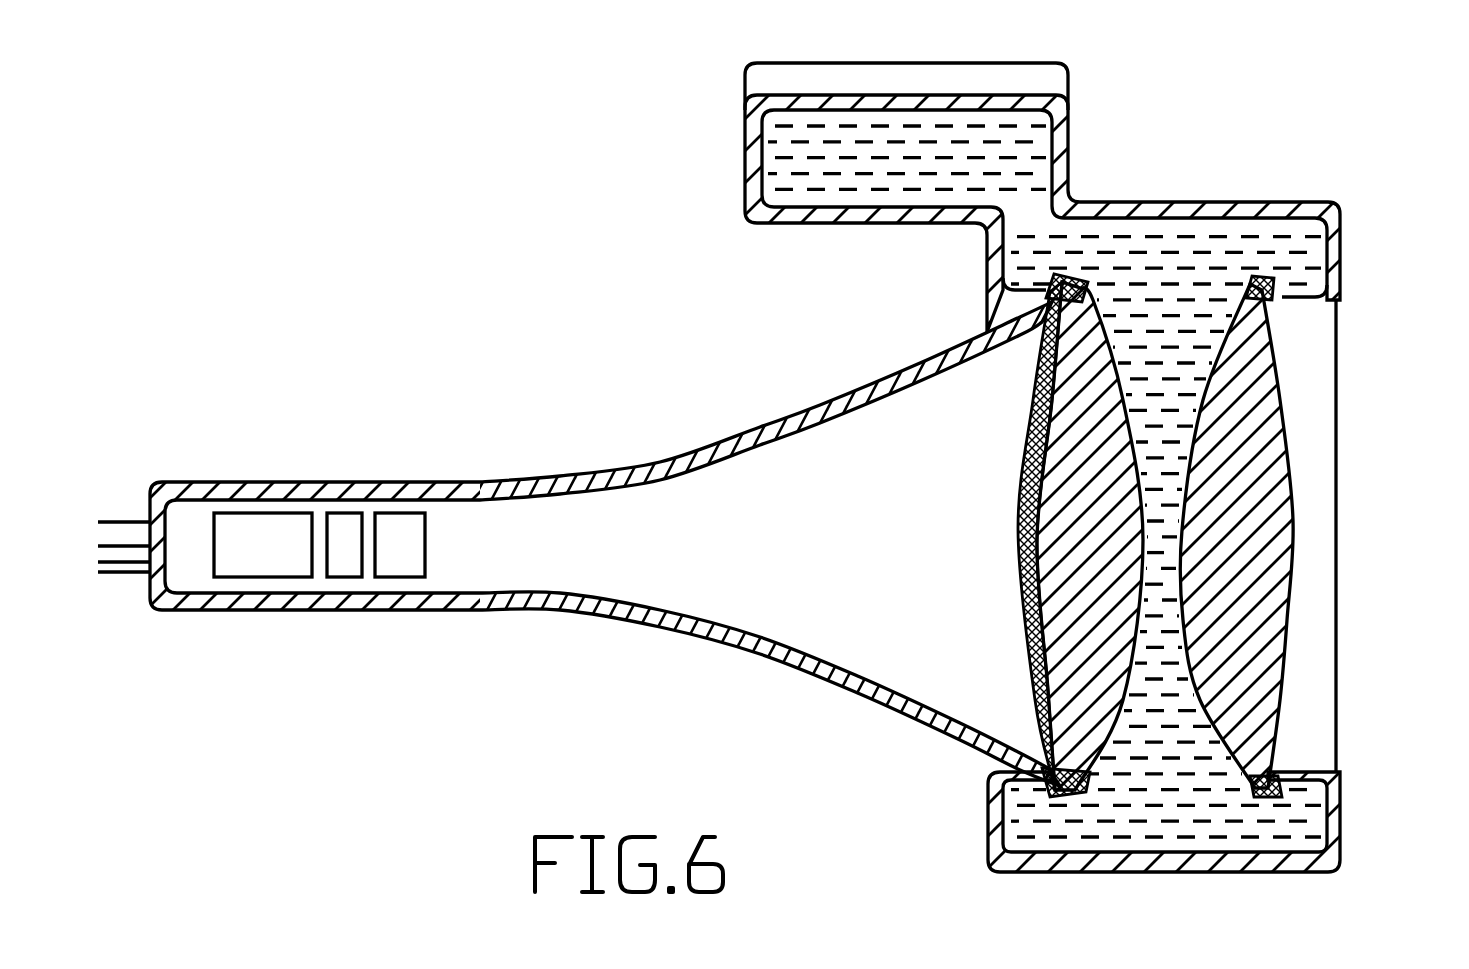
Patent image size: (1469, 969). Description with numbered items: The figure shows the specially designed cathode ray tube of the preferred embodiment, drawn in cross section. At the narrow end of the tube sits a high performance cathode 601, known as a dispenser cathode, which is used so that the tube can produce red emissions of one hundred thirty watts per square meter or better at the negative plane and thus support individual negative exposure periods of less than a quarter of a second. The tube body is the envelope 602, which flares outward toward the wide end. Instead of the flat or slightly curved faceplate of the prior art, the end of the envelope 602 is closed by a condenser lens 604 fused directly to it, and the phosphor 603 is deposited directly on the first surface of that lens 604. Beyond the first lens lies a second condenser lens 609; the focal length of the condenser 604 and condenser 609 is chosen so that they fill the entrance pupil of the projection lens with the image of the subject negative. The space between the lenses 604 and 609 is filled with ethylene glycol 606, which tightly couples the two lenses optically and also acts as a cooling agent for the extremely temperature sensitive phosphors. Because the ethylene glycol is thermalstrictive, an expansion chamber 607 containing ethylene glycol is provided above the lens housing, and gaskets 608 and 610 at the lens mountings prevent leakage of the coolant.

The cathode 601 is at (242, 513).
The envelope 602 is at (495, 480).
The phosphor 603 is at (1020, 473).
The condenser lens 604 is at (1090, 412).
The ethylene glycol 606 is at (797, 172).
The expansion chamber 607 is at (745, 142).
The gasket 608 is at (1067, 277).
The condenser lens 609 is at (1275, 357).
The gasket 610 is at (1262, 283).